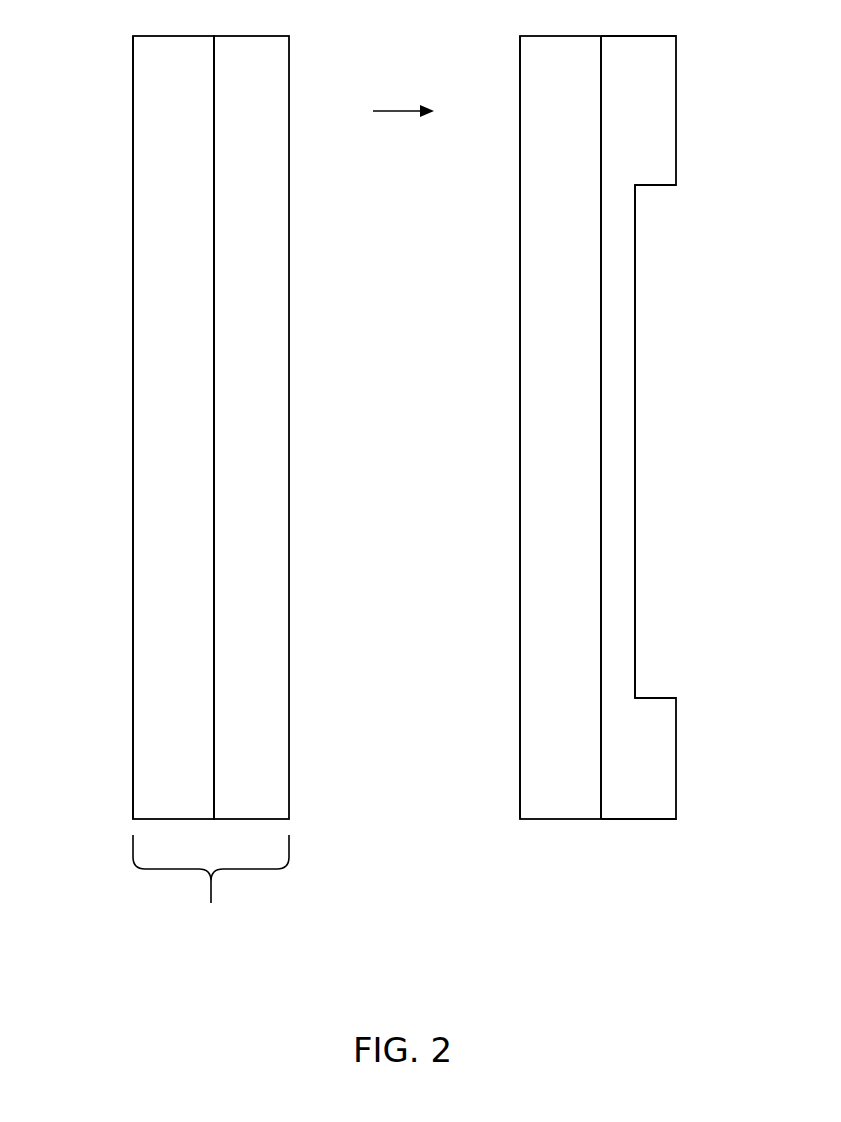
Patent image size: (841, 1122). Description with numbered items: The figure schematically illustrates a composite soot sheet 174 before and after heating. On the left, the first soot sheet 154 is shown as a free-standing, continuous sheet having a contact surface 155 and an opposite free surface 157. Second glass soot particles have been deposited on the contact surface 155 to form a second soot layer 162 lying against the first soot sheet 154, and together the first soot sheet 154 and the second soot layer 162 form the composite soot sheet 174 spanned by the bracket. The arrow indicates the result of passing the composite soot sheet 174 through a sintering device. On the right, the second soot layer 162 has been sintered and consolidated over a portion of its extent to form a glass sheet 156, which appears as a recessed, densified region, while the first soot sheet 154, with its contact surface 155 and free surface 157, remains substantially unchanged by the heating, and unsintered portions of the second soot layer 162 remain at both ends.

The first soot sheet 154 is at (204, 519).
The contact surface 155 is at (213, 287).
The glass sheet 156 is at (623, 473).
The free surface 157 is at (133, 255).
The second soot layer 162 is at (284, 448).
The composite soot sheet 174 is at (211, 893).